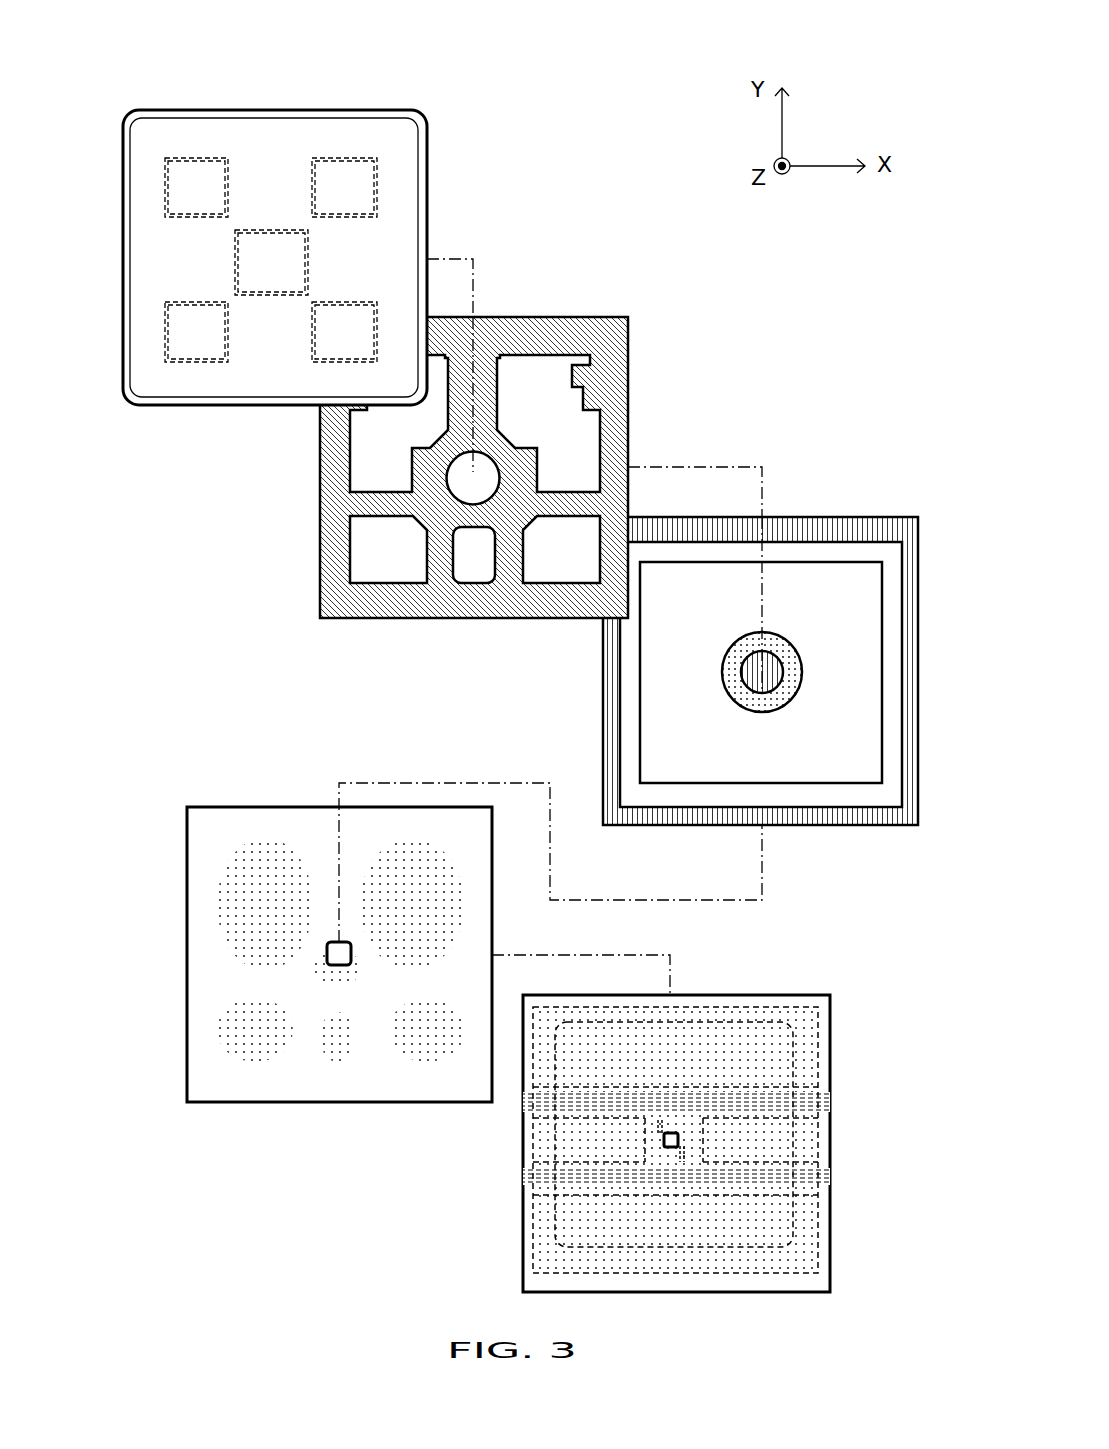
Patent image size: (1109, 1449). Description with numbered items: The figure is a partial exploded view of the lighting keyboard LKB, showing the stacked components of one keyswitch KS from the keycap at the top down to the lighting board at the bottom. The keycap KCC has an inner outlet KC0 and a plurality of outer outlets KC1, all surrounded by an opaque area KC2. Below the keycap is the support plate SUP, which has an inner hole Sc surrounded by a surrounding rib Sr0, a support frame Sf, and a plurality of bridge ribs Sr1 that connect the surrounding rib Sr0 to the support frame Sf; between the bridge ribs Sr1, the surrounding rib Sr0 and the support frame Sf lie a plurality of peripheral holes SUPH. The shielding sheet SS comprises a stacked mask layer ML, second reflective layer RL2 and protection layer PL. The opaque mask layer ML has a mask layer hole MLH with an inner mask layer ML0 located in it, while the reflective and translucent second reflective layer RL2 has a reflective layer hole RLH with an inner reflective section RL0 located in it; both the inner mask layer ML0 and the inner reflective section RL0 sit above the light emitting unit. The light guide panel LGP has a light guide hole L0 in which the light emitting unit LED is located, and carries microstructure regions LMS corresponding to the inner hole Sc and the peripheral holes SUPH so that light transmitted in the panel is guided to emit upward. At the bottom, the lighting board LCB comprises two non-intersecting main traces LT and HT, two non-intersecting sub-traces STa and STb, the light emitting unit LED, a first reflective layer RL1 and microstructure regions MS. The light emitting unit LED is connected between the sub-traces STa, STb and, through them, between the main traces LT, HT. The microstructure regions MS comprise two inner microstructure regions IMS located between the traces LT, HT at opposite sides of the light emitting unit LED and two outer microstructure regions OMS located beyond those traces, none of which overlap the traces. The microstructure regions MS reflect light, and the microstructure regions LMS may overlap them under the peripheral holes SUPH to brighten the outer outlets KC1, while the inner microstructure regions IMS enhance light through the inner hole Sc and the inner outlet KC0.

The lighting keyboard LKB is at (628, 58).
The keyswitch KS is at (431, 93).
The keycap KCC is at (273, 107).
The inner outlet KC0 is at (272, 230).
The opaque area KC2 is at (350, 258).
The outer outlets KC1 is at (198, 217).
The support plate SUP is at (538, 281).
The surrounding rib Sr0 is at (497, 457).
The support frame Sf is at (612, 400).
The bridge ribs Sr1 is at (515, 557).
The inner hole Sc is at (465, 490).
The peripheral holes SUPH is at (550, 558).
The mask layer ML is at (820, 518).
The shielding sheet SS is at (869, 502).
The protection layer PL is at (688, 634).
The second reflective layer RL2 is at (628, 653).
The reflective layer hole RLH is at (638, 673).
The inner reflective section RL0 is at (722, 672).
The mask layer hole MLH is at (638, 735).
The inner mask layer ML0 is at (778, 690).
The light guide panel LGP is at (249, 780).
The microstructure regions LMS is at (237, 1015).
The light guide hole L0 is at (337, 965).
The lighting board LCB is at (714, 967).
The trace STa is at (657, 1123).
The outer microstructure regions OMS is at (792, 1015).
The inner microstructure regions IMS is at (587, 1117).
The trace HT is at (813, 1095).
The light emitting unit LED is at (678, 1137).
The first reflective layer RL1 is at (815, 1143).
The trace STb is at (685, 1160).
The microstructure regions MS is at (675, 1195).
The trace LT is at (557, 1180).